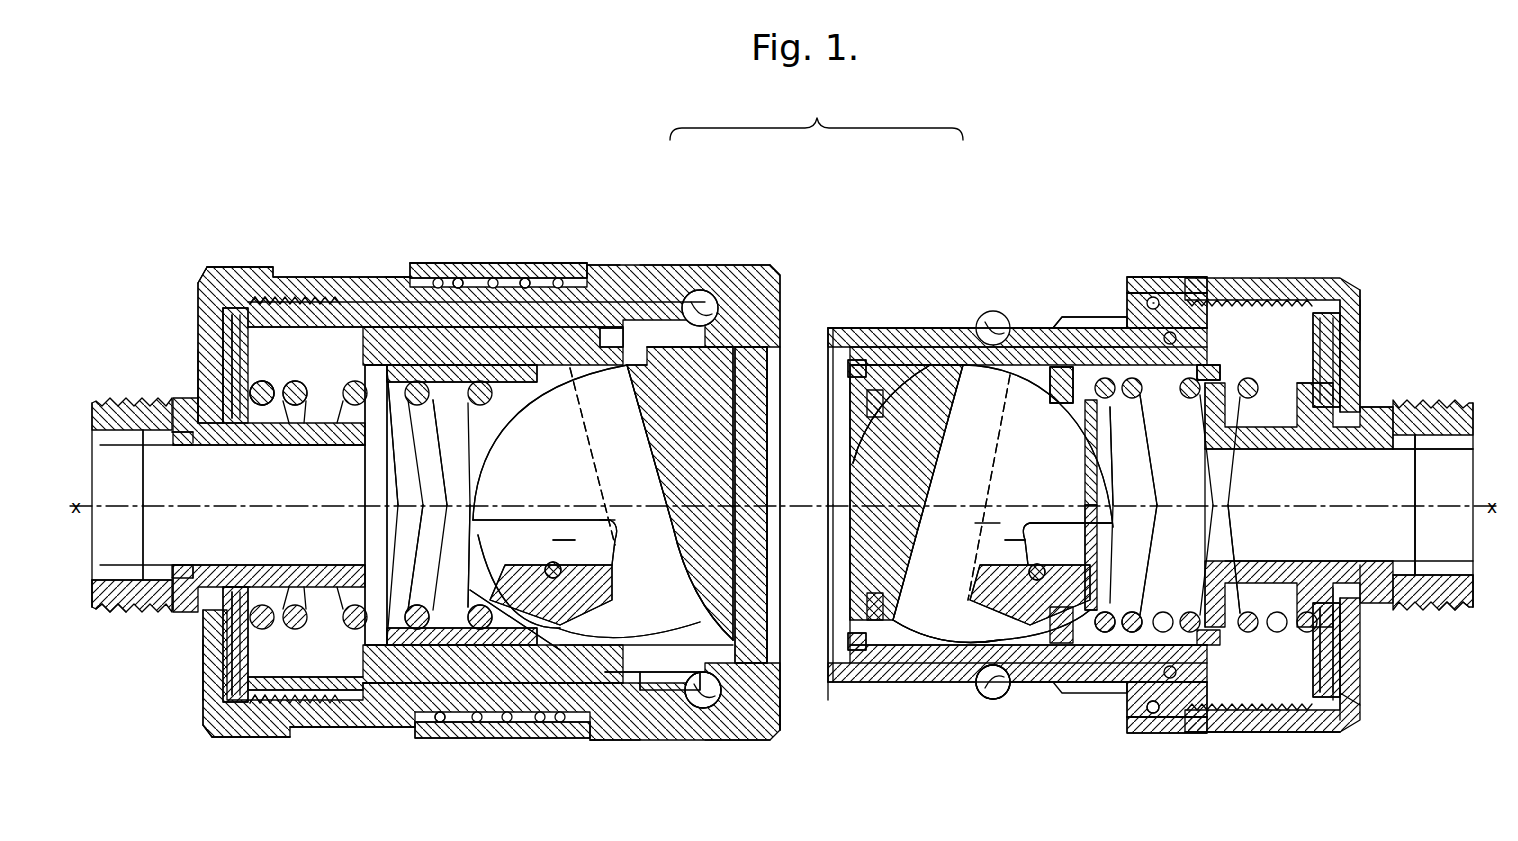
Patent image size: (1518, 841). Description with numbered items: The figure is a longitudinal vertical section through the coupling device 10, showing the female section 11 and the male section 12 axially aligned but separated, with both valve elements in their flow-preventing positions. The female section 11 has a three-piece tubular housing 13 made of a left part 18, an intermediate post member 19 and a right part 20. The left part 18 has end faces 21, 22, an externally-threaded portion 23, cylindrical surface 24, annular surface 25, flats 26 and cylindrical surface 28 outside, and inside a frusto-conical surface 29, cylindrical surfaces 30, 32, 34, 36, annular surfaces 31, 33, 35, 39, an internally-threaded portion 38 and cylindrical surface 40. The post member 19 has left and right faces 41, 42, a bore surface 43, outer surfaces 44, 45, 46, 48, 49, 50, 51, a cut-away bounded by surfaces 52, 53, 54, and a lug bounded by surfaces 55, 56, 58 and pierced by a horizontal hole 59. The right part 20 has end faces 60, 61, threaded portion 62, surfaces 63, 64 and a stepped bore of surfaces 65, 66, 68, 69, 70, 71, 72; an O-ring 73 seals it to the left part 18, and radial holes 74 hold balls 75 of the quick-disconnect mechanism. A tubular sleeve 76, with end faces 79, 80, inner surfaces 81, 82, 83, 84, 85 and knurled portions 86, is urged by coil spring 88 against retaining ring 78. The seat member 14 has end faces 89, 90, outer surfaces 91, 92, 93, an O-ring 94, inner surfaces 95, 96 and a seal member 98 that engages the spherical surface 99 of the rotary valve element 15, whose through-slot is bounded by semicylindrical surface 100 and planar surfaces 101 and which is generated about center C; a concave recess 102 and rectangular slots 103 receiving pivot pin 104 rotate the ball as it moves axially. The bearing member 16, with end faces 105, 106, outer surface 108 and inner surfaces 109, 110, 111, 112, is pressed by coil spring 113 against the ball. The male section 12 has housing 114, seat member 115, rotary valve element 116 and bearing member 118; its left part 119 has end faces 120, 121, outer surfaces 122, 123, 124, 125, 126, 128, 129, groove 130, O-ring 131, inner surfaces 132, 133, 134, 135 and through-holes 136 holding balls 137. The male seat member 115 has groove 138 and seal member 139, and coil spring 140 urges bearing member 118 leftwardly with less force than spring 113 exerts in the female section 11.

The coupling device 10 is at (816, 112).
The female section 11 is at (455, 192).
The male section 12 is at (1200, 195).
The tubular housing 13 is at (310, 267).
The seat member 14 is at (580, 318).
The rotary valve element 15 is at (634, 420).
The bearing member 16 is at (378, 372).
The housing left part 18 is at (205, 320).
The post member 19 is at (233, 440).
The housing right part 20 is at (505, 263).
The left end face 21 is at (95, 602).
The right end face 22 is at (450, 740).
The externally-threaded portion 23 is at (118, 610).
The outwardly-facing horizontal cylindrical surface 24 is at (190, 608).
The leftwardly-facing annular vertical surface 25 is at (202, 659).
The flats 26 is at (215, 738).
The outwardly-facing horizontal cylindrical surface 28 is at (315, 740).
The frusto-conical surface 29 is at (120, 590).
The inwardly-facing horizontal cylindrical surface 30 is at (150, 572).
The leftwardly-facing annular vertical surface 31 is at (160, 560).
The inwardly-facing horizontal cylindrical surface 32 is at (205, 565).
The rightwardly-facing annular vertical surface 33 is at (230, 565).
The inwardly-facing horizontal cylindrical surface 34 is at (240, 562).
The rightwardly-facing annular vertical surface 35 is at (235, 595).
The inwardly-facing horizontal cylindrical surface 36 is at (222, 684).
The internally-threaded portion 38 is at (268, 690).
The rightwardly-facing annular vertical surface 39 is at (385, 727).
The inwardly-facing horizontal cylindrical surface 40 is at (380, 650).
The left face 41 is at (172, 448).
The right face 42 is at (618, 552).
The inwardly-facing horizontal cylindrical surface 43 is at (300, 435).
The outwardly-facing horizontal cylindrical surface 44 is at (204, 377).
The leftwardly-facing annular vertical surface 45 is at (212, 346).
The outwardly-facing horizontal cylindrical surface 46 is at (222, 297).
The rightwardly-facing annular vertical surface 48 is at (250, 341).
The outwardly-facing horizontal cylindrical surface 49 is at (268, 383).
The rightwardly-facing annular vertical surface 50 is at (270, 425).
The outwardly-facing horizontal cylindrical surface 51 is at (333, 423).
The rightwardly-facing vertical surface 52 is at (366, 464).
The upwardly-facing planar horizontal surface 53 is at (520, 510).
The inclined surface 54 is at (614, 529).
The frusto-conical surface 55 is at (498, 590).
The outwardly-facing horizontal cylindrical surface 56 is at (560, 645).
The frusto-conical surface 58 is at (583, 612).
The horizontal hole 59 is at (590, 600).
The left end face 60 is at (240, 740).
The right end face 61 is at (785, 715).
The externally-threaded portion 62 is at (290, 735).
The leftwardly-facing annular vertical surface 63 is at (335, 730).
The outwardly-facing horizontal cylindrical surface 64 is at (605, 740).
The frusto-conical surface 65 is at (268, 665).
The inwardly-facing horizontal cylindrical surface 66 is at (345, 677).
The abutment surface 68 is at (590, 740).
The inwardly-facing horizontal cylindrical surface 69 is at (605, 684).
The frusto-conical surface 70 is at (655, 650).
The inwardly-facing horizontal cylindrical surface 71 is at (650, 688).
The frusto-conical surface 72 is at (785, 690).
The O-ring 73 is at (400, 738).
The radial hole 74 is at (690, 720).
The ball 75 is at (718, 690).
The tubular sleeve 76 is at (430, 262).
The retaining ring 78 is at (718, 312).
The left end face 79 is at (395, 277).
The right end face 80 is at (782, 275).
The inwardly-facing horizontal cylindrical surface 81 is at (462, 278).
The abutment surface 82 is at (548, 290).
The inwardly-facing horizontal cylindrical surface 83 is at (612, 297).
The frusto-conical surface 84 is at (750, 265).
The inwardly-facing horizontal cylindrical surface 85 is at (782, 300).
The knurled portion 86 is at (540, 263).
The coil spring 88 is at (527, 278).
The left end face 89 is at (362, 345).
The right end face 90 is at (742, 372).
The outwardly-facing horizontal cylindrical surface 91 is at (455, 307).
The abutment surface 92 is at (606, 344).
The outwardly-facing horizontal cylindrical surface 93 is at (690, 347).
The O-ring 94 is at (510, 345).
The inwardly-facing horizontal cylindrical surface 95 is at (440, 385).
The spherically-segmented surface 96 is at (666, 410).
The seal member 98 is at (702, 612).
The spherical surface 99 is at (672, 382).
The semicylindrical surface 100 is at (636, 392).
The planar surface 101 is at (538, 458).
The concave recess 102 is at (742, 464).
The rectangular slot 103 is at (570, 548).
The pivot pin 104 is at (598, 532).
The left end face 105 is at (372, 640).
The right end face 106 is at (535, 644).
The outwardly-facing horizontal cylindrical surface 108 is at (420, 647).
The inwardly-facing horizontal cylindrical surface 109 is at (430, 630).
The leftwardly-facing annular vertical surface 110 is at (470, 640).
The inwardly-facing horizontal cylindrical surface 111 is at (440, 600).
The spherically-segmented surface 112 is at (508, 405).
The coil spring 113 is at (412, 476).
The tubular housing 114 is at (1050, 318).
The seat member 115 is at (1135, 277).
The rotary valve element 116 is at (960, 395).
The bearing member 118 is at (1222, 367).
The housing left part 119 is at (900, 700).
The left end face 120 is at (830, 672).
The right end face 121 is at (1370, 682).
The outwardly-facing horizontal cylindrical surface 122 is at (860, 682).
The frusto-conical surface 123 is at (975, 690).
The outwardly-facing horizontal cylindrical surface 124 is at (1020, 690).
The frusto-conical surface 125 is at (1110, 705).
The outwardly-facing horizontal cylindrical surface 126 is at (1130, 730).
The rightwardly-facing annular vertical surface 128 is at (1210, 732).
The externally-threaded portion 129 is at (1262, 725).
The annular groove 130 is at (1035, 690).
The O-ring 131 is at (1150, 735).
The inwardly-facing horizontal cylindrical surface 132 is at (930, 628).
The rightwardly-facing annular vertical surface 133 is at (1078, 672).
The inwardly-facing horizontal cylindrical surface 134 is at (1245, 680).
The frusto-conical surface 135 is at (1300, 683).
The radial through-hole 136 is at (990, 644).
The ball 137 is at (985, 700).
The annular groove 138 is at (900, 328).
The seal member 139 is at (848, 368).
The coil spring 140 is at (1135, 478).
The center C is at (612, 505).